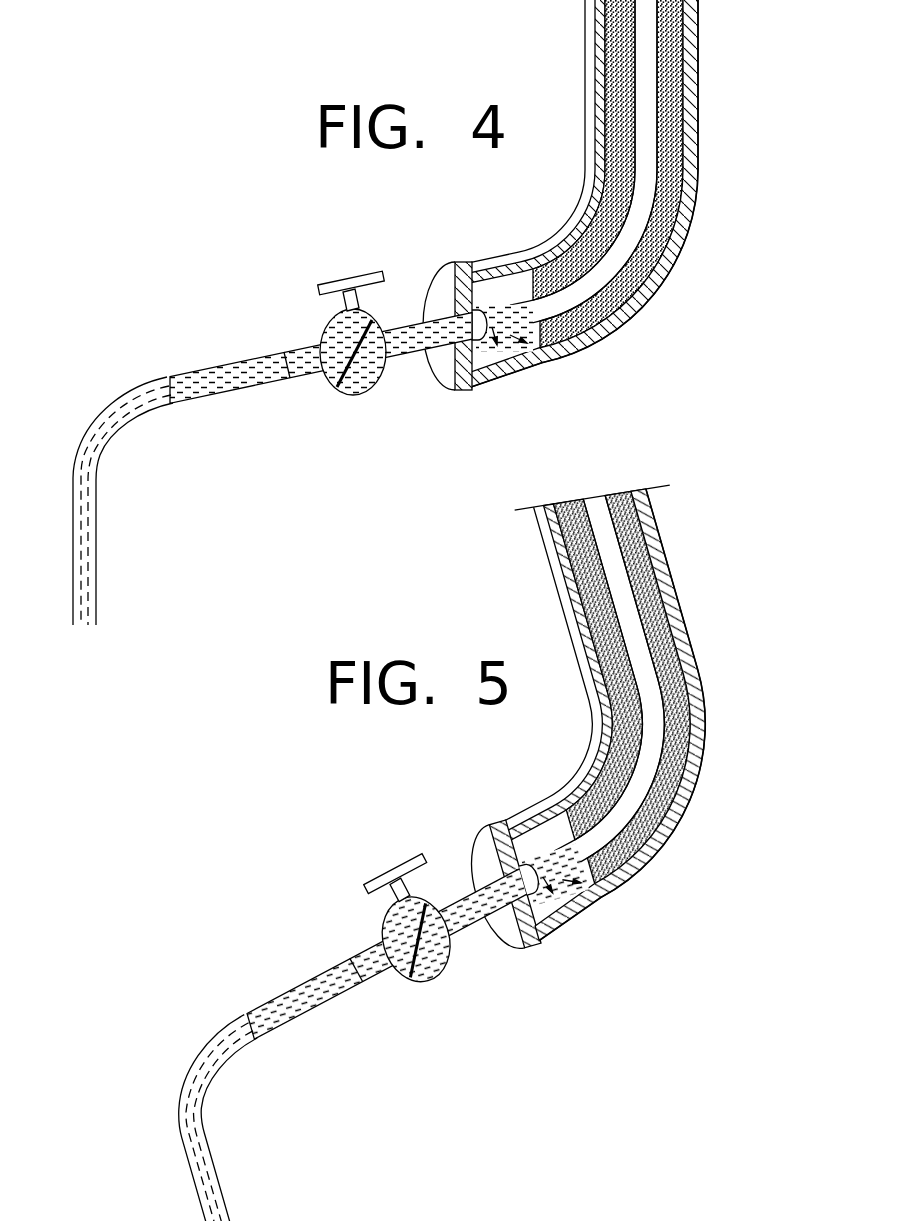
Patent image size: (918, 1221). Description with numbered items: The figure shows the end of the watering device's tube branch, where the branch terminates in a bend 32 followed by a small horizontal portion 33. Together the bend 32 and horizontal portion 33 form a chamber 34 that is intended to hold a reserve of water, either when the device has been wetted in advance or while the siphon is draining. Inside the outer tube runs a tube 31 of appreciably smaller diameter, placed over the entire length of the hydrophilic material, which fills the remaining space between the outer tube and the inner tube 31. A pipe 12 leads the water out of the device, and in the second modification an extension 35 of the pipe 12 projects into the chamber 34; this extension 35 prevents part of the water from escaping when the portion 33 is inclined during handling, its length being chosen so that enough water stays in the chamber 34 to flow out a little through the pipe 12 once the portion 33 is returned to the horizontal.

In FIG. 4, the pipe 12 is at (113, 397).
In FIG. 4, the tube 31 is at (652, 140).
In FIG. 4, the bend 32 is at (663, 278).
In FIG. 5, the bend 32 is at (682, 815).
In FIG. 4, the horizontal portion 33 is at (588, 349).
In FIG. 5, the horizontal portion 33 is at (633, 880).
In FIG. 4, the chamber 34 is at (557, 360).
In FIG. 4, the extension 35 is at (498, 363).
In FIG. 5, the extension 35 is at (547, 900).